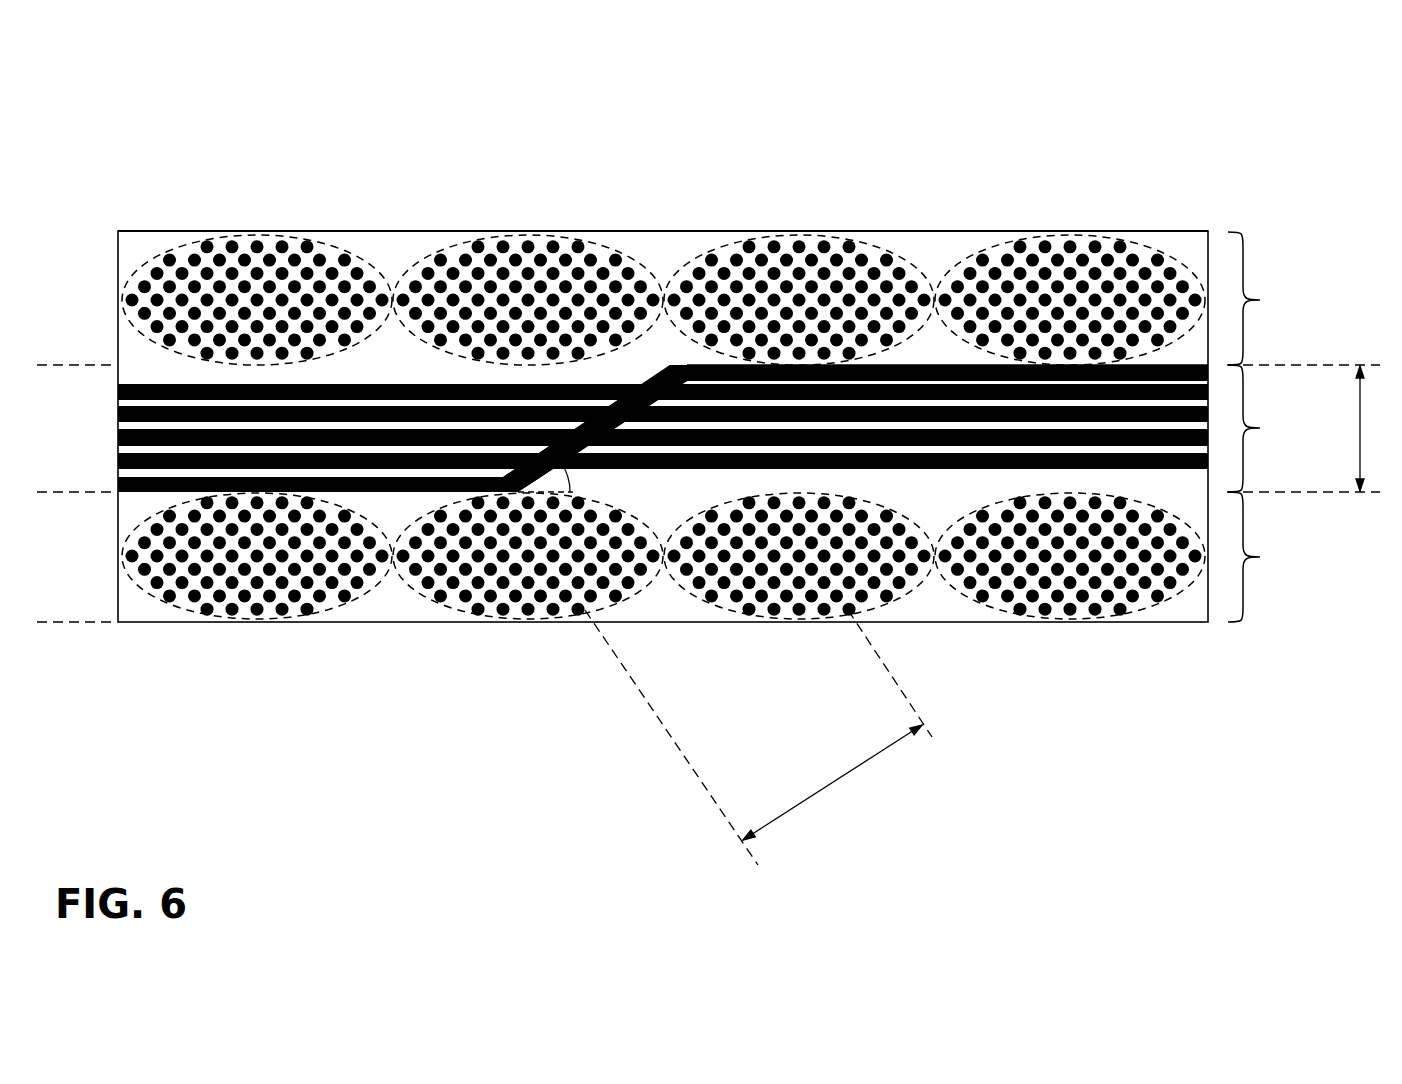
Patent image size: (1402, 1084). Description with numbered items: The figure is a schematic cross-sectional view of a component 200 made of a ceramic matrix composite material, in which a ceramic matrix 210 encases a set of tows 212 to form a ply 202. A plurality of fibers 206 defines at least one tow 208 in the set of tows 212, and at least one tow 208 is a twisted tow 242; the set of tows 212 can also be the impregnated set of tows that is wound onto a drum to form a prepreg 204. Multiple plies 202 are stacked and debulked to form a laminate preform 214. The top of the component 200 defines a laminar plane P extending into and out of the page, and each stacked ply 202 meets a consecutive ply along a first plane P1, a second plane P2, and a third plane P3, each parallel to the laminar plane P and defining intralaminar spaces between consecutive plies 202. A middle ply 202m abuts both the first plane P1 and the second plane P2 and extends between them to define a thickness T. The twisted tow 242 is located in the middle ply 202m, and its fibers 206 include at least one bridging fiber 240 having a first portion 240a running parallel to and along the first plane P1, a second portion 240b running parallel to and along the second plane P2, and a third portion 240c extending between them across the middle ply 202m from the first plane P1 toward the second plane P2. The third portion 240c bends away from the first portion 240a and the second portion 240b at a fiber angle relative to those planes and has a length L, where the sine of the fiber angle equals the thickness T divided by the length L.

The component 200 is at (258, 170).
The ply 202 is at (716, 427).
The middle ply 202m is at (1276, 428).
The prepreg 204 is at (100, 308).
The fibers 206 is at (117, 417).
The tow 208 is at (1153, 233).
The ceramic matrix 210 is at (662, 597).
The set of tows 212 is at (912, 610).
The laminate preform 214 is at (968, 238).
The bridging fiber 240 is at (596, 268).
The first portion 240a is at (905, 365).
The second portion 240b is at (407, 493).
The third portion 240c is at (664, 375).
The twisted tow 242 is at (1213, 362).
The laminar plane P is at (655, 233).
The first plane P1 is at (85, 360).
The second plane P2 is at (78, 498).
The third plane P3 is at (85, 632).
The thickness T is at (1371, 428).
The length L is at (758, 737).